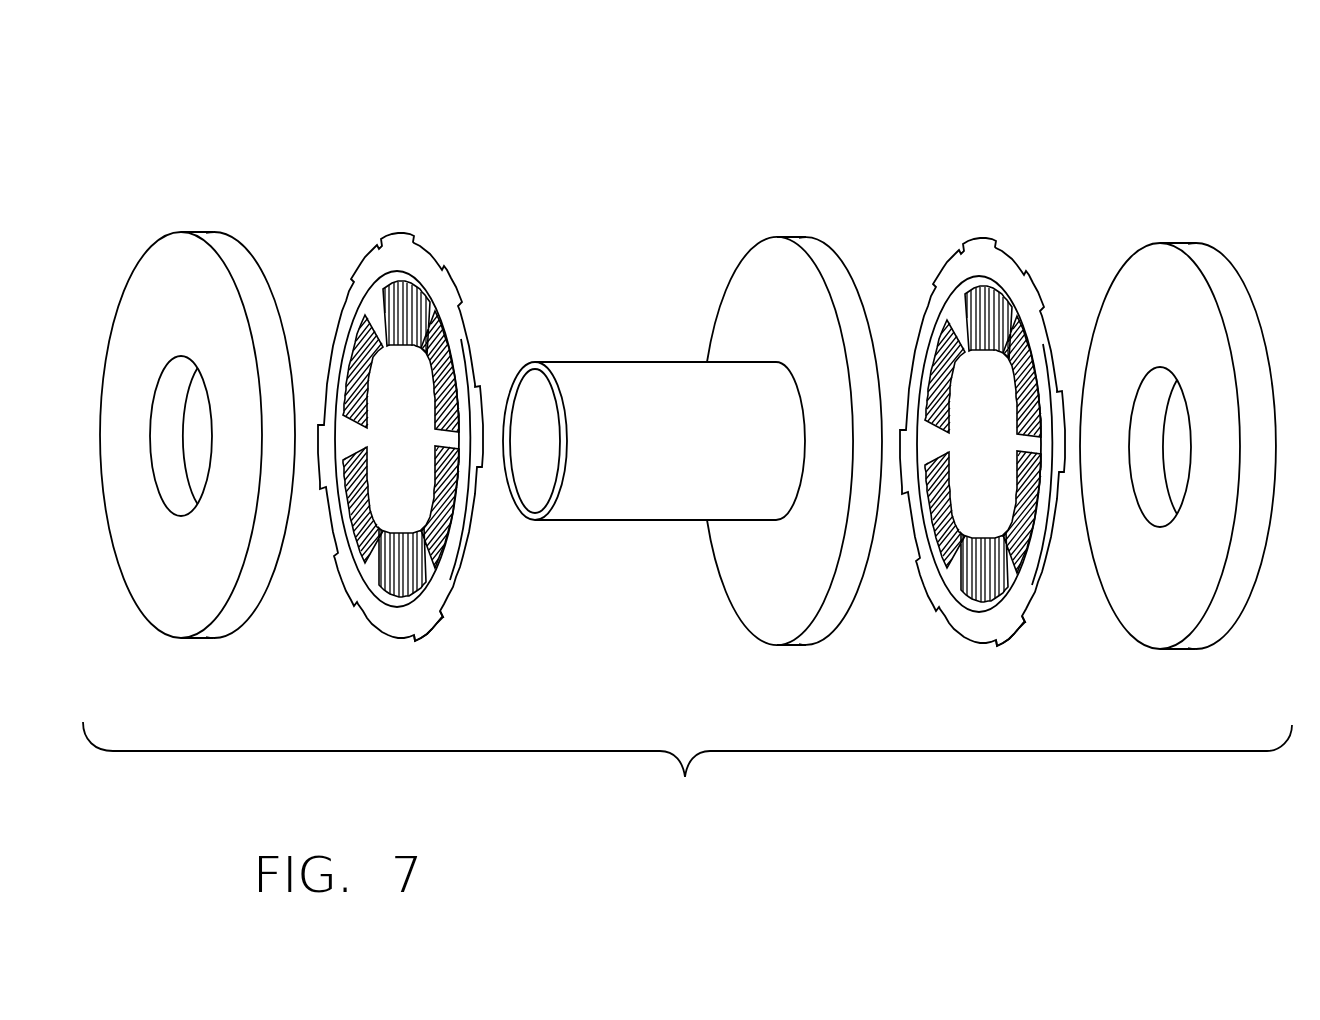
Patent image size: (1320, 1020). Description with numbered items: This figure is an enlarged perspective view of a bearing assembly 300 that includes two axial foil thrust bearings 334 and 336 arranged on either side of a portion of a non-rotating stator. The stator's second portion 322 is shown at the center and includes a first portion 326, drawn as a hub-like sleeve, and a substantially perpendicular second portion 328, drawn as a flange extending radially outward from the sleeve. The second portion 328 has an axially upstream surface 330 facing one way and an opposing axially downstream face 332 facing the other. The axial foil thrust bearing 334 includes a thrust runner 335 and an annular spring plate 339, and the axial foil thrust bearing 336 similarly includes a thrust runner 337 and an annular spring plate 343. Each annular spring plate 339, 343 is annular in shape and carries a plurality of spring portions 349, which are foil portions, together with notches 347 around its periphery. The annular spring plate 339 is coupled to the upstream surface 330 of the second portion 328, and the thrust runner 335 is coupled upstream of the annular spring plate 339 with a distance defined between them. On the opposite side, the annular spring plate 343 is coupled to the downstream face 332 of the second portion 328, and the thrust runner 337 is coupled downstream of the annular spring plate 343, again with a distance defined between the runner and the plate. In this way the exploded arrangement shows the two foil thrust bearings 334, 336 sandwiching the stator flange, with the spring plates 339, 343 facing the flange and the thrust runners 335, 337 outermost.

The clutch pack assembly 300 is at (705, 82).
The second portion 322 is at (763, 451).
The first portion 326 is at (633, 522).
The second portion 328 is at (805, 640).
The axially upstream surface 330 is at (730, 300).
The axially downstream face 332 is at (837, 256).
The axial foil thrust bearing 334 is at (397, 393).
The thrust runner 335 is at (203, 231).
The axial foil thrust bearing 336 is at (982, 400).
The thrust runner 337 is at (1178, 243).
The annular spring plate 339 is at (420, 420).
The annular spring plate 343 is at (1003, 427).
The notches 347 is at (686, 656).
The spring portions 349 is at (692, 437).